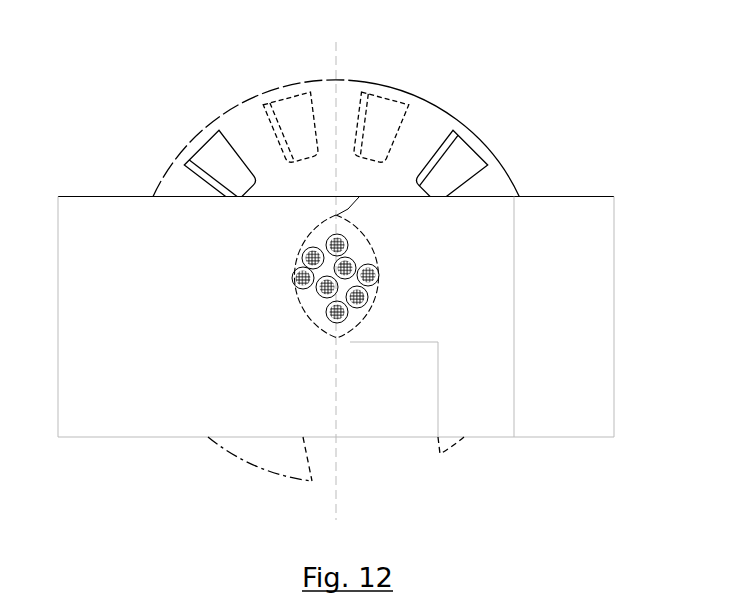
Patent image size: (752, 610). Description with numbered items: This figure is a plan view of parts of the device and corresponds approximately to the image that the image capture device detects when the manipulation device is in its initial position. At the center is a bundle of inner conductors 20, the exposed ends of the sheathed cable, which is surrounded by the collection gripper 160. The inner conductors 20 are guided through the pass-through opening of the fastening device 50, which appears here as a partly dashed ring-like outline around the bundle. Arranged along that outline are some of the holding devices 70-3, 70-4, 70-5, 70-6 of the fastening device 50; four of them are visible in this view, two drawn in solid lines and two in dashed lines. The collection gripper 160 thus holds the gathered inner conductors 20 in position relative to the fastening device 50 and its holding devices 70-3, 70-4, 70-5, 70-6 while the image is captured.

The inner conductor 20 is at (337, 318).
The fastening device 50 is at (248, 112).
The holding device 70-3 is at (198, 155).
The holding device 70-4 is at (293, 107).
The holding device 70-5 is at (385, 113).
The holding device 70-6 is at (460, 153).
The collection gripper 160 is at (508, 432).